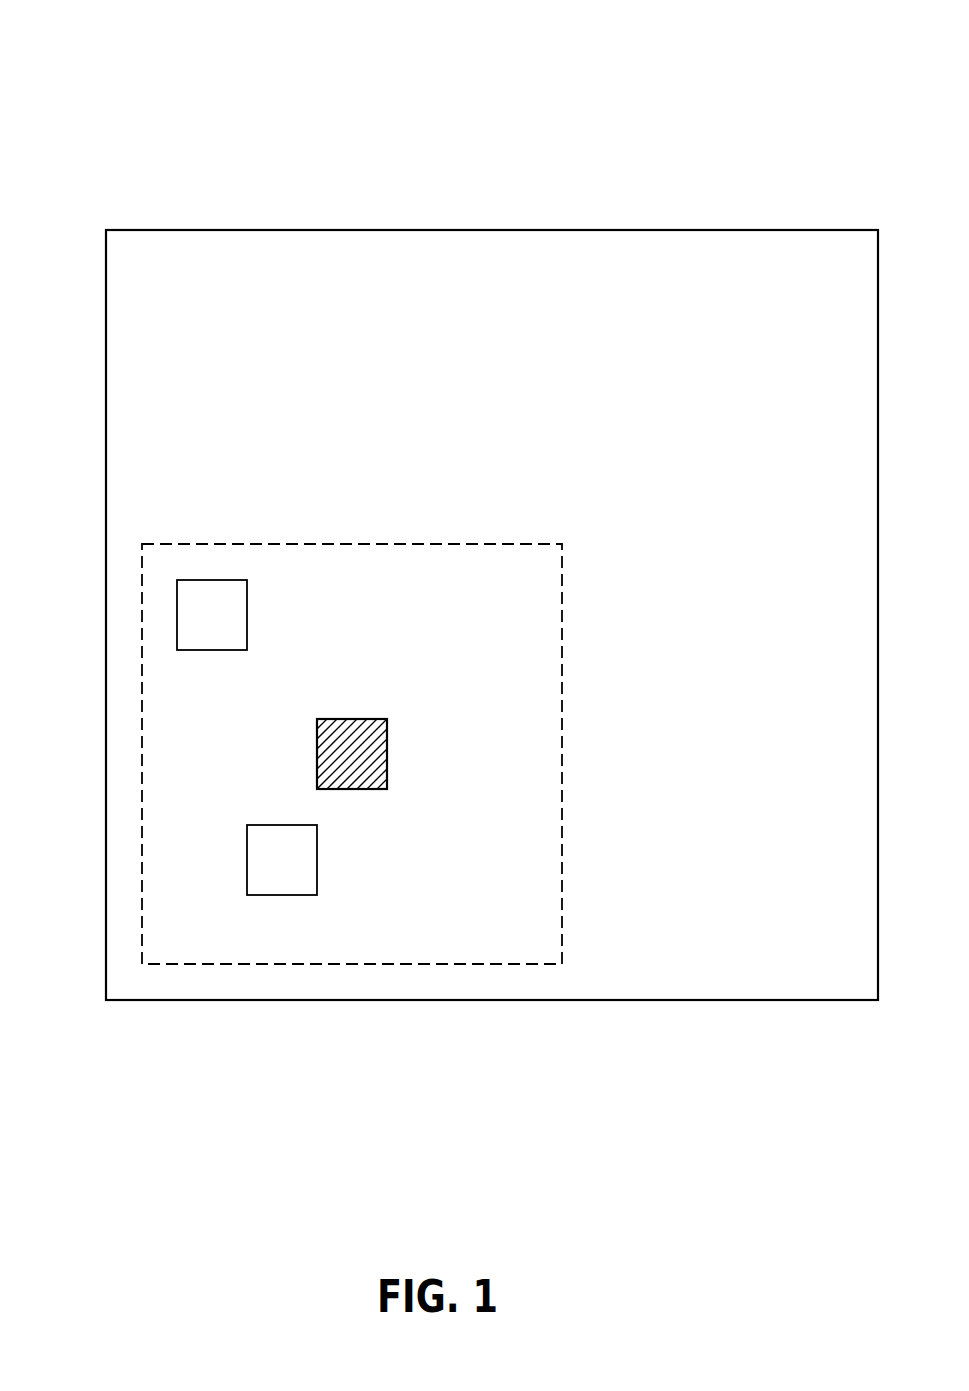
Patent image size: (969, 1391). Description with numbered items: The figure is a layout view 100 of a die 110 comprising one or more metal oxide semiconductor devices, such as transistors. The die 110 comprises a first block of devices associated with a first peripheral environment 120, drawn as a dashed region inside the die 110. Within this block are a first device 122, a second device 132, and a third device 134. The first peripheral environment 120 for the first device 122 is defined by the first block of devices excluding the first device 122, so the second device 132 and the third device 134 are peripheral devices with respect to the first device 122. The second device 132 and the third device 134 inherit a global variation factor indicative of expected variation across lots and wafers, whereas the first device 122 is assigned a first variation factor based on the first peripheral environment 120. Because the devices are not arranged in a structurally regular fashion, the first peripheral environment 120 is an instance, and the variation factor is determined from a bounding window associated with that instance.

The layout view 100 is at (134, 45).
The die 110 is at (457, 230).
The first peripheral environment 120 is at (283, 543).
The first device 122 is at (350, 720).
The second device 132 is at (282, 860).
The third device 134 is at (212, 615).